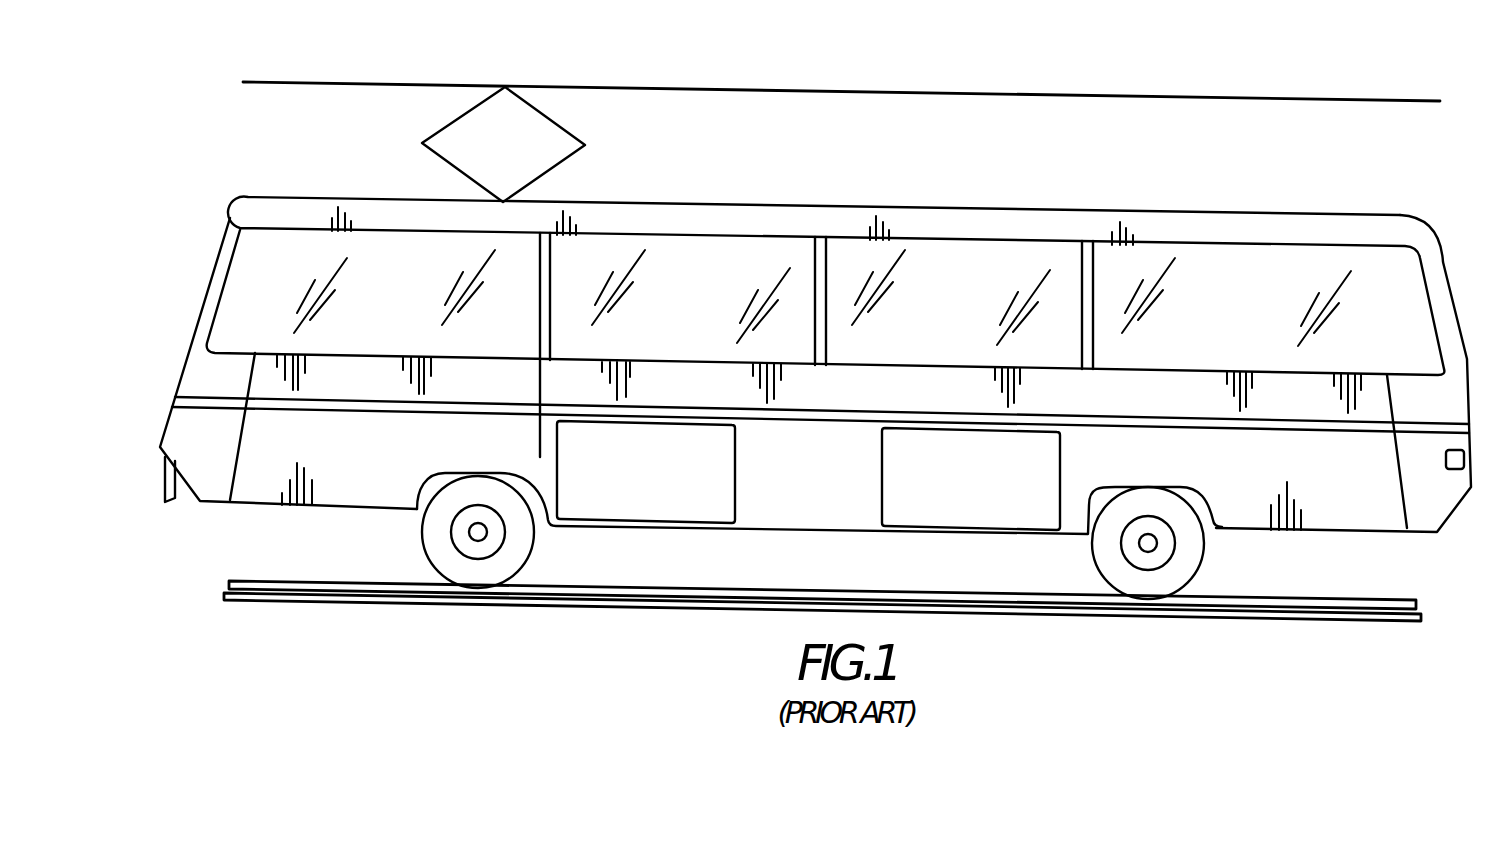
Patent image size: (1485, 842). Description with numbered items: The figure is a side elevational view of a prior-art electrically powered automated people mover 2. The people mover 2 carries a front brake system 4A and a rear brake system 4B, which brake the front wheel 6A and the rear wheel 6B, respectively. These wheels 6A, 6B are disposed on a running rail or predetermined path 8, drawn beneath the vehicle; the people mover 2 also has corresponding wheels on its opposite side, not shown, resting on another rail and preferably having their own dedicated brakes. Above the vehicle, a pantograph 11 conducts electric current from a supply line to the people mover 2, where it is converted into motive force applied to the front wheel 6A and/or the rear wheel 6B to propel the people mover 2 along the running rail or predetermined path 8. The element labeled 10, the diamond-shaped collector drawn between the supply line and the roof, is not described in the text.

The electrically powered automated people mover 2 is at (1024, 211).
The front brake system 4A is at (737, 492).
The rear brake system 4B is at (880, 487).
The front wheel 6A is at (425, 537).
The rear wheel 6B is at (1192, 571).
The running rail or predetermined path 8 is at (704, 597).
The pantograph current collector 10 is at (573, 153).
The pantograph 11 is at (392, 82).